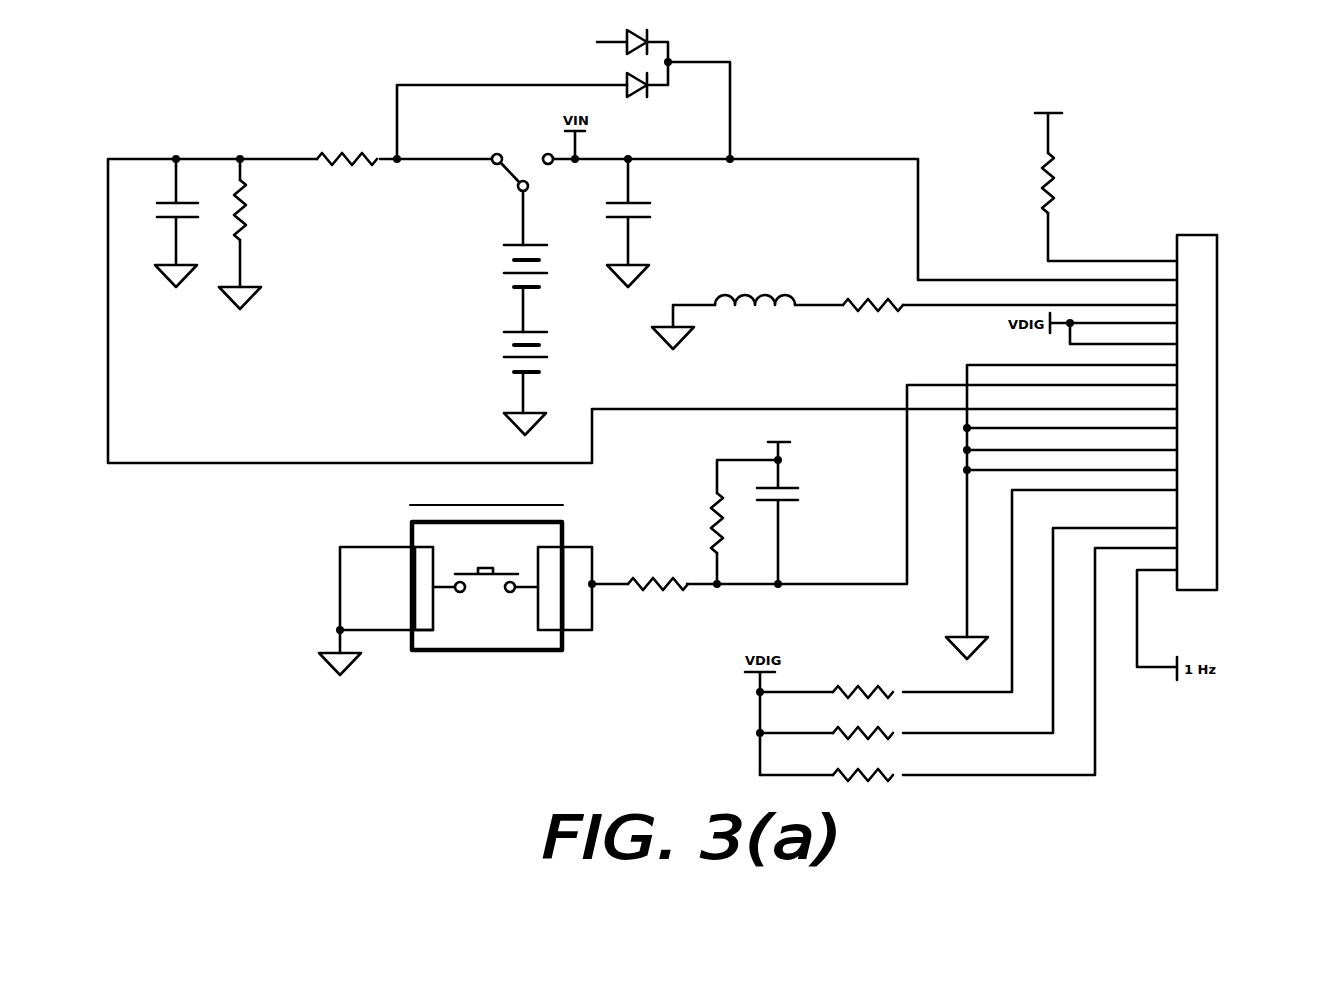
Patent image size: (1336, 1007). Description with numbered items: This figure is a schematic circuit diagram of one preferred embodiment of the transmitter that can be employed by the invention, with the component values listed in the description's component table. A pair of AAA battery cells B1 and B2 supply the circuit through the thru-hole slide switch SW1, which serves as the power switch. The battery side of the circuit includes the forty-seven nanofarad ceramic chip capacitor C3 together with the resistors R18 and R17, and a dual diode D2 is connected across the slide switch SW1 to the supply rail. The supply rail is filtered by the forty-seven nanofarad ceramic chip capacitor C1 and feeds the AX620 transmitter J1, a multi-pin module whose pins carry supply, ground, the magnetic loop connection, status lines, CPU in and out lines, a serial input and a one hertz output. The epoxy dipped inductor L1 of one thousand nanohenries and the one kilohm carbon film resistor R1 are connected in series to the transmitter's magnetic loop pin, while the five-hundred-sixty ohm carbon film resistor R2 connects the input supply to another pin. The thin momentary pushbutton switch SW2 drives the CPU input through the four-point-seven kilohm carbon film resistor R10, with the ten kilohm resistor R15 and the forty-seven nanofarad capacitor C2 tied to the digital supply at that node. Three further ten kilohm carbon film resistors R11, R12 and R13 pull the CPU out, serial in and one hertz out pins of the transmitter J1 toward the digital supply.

The ceramic chip capacitor C3 is at (192, 223).
The resistor 10K R18 is at (250, 234).
The resistor 10K R17 is at (347, 161).
The slide switch SW1 is at (508, 173).
The ceramic chip capacitor C1 is at (644, 223).
The dual diode BAV70WT1 D2 is at (658, 84).
The AAA battery B2 is at (484, 272).
The AAA battery B1 is at (484, 367).
The epoxy dipped inductor L1 is at (723, 312).
The carbon film resistor R1 is at (986, 305).
The carbon film resistor R2 is at (1105, 177).
The carbon film resistor R10 is at (640, 589).
The carbon film resistor R15 is at (744, 522).
The ceramic chip capacitor C2 is at (793, 504).
The thin pushbutton switch SW2 is at (477, 582).
The carbon film resistor R11 is at (968, 594).
The carbon film resistor R12 is at (968, 633).
The carbon film resistor R13 is at (968, 664).
The AX620 transmitter J1 is at (1219, 415).